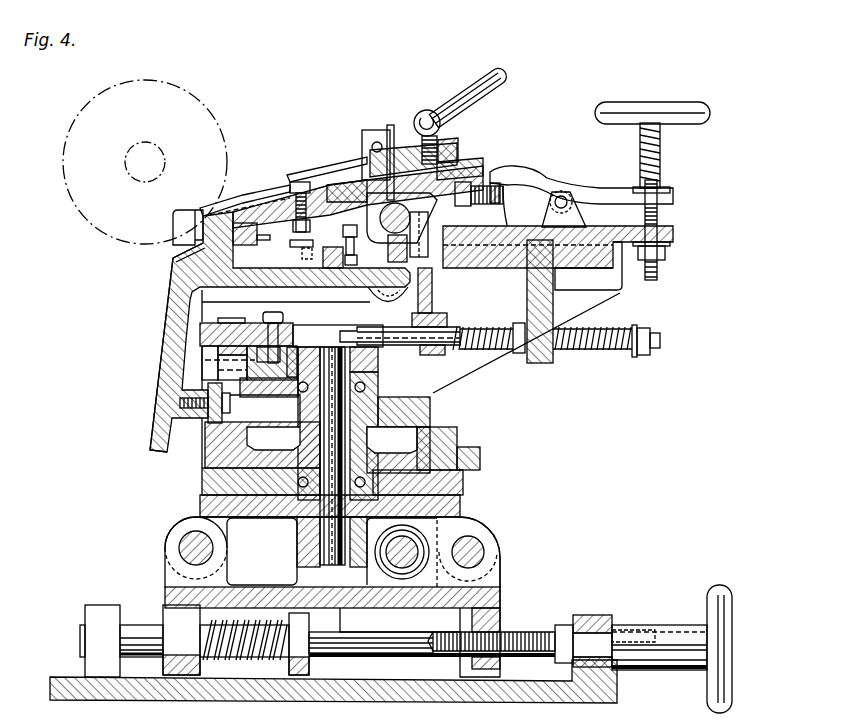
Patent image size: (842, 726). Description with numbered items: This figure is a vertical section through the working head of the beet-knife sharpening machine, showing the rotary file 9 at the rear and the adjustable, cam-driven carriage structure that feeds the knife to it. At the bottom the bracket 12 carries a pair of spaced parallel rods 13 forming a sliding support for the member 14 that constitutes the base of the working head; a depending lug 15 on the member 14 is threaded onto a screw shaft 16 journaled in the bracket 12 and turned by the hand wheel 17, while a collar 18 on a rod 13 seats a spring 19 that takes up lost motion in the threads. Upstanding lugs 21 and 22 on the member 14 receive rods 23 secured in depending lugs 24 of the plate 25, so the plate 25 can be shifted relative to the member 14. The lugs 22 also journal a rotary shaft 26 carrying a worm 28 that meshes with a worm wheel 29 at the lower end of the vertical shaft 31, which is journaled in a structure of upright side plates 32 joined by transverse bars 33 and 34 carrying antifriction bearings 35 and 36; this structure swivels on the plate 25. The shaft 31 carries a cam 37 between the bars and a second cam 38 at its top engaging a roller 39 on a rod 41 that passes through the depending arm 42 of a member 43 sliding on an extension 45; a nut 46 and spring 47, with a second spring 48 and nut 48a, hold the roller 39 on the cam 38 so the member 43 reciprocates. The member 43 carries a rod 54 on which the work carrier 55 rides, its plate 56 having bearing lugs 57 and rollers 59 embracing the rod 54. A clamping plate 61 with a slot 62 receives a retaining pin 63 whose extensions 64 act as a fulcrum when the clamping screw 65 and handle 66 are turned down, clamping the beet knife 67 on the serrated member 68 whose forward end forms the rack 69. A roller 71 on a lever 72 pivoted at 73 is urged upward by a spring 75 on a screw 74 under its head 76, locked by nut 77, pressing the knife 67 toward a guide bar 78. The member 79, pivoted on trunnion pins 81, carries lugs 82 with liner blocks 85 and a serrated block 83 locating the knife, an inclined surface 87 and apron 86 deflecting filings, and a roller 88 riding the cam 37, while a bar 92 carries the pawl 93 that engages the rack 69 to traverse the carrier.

The rotary file 9 is at (190, 93).
The bracket 12 is at (590, 705).
The spaced parallel rods 13 is at (137, 630).
The member 14 is at (505, 598).
The depending lug 15 is at (502, 627).
The screw shaft 16 is at (517, 660).
The hand wheel 17 is at (710, 598).
The collar 18 is at (309, 618).
The spring 19 is at (227, 660).
The standing lugs 21 is at (163, 542).
The standing lugs 22 is at (490, 533).
The rods 23 is at (187, 535).
The depending lugs 24 is at (200, 508).
The plate 25 is at (467, 513).
The rotary shaft 26 is at (417, 540).
The worm 28 is at (398, 605).
The worm wheel 29 is at (287, 567).
The vertical shaft 31 is at (323, 566).
The upright side plates 32 is at (200, 302).
The transverse bar 33 is at (203, 472).
The transverse bar 34 is at (437, 393).
The antifriction bearing 35 is at (370, 472).
The antifriction bearing 36 is at (377, 377).
The cam 37 is at (458, 437).
The second cam 38 is at (353, 343).
The roller 39 is at (245, 362).
The rod 41 is at (303, 327).
The depending arm 42 is at (550, 365).
The member 43 is at (612, 262).
The extension 45 is at (588, 305).
The nut 46 is at (655, 352).
The coiled spring 47 is at (613, 350).
The second spring 48 is at (472, 332).
The nut 48a is at (518, 355).
The rod 54 is at (450, 142).
The work carrier 55 is at (392, 170).
The plate 56 is at (473, 163).
The bearing lugs 57 is at (417, 205).
The roller 59 is at (407, 255).
The clamping plate 61 is at (293, 173).
The slot 62 is at (305, 165).
The retaining pin 63 is at (370, 130).
The transverse extensions 64 is at (385, 125).
The clamping screw 65 is at (423, 110).
The handle 66 is at (497, 97).
The beet knife 67 is at (282, 194).
The member 68 is at (290, 232).
The rack 69 is at (343, 232).
The roller 71 is at (483, 180).
The lever 72 is at (530, 178).
The pivot 73 is at (554, 201).
The screw 74 is at (662, 213).
The spring 75 is at (660, 155).
The head 76 is at (703, 103).
The lock nut 77 is at (667, 252).
The guide bar 78 is at (245, 245).
The member 79 is at (197, 283).
The trunnion pins 81 is at (382, 293).
The upstanding lugs 82 is at (173, 224).
The block 83 is at (210, 247).
The liner block 85 is at (200, 210).
The depending apron 86 is at (166, 362).
The intermediate surface 87 is at (200, 248).
The roller 88 is at (232, 406).
The bar 92 is at (298, 283).
The pawl 93 is at (337, 285).